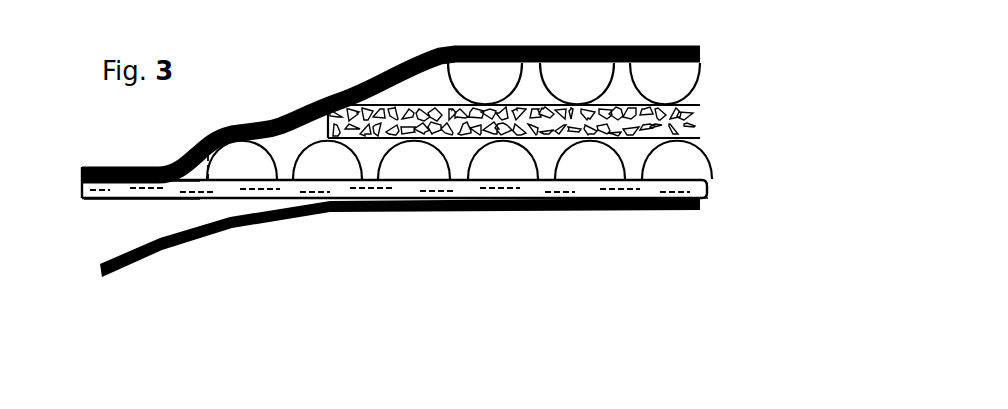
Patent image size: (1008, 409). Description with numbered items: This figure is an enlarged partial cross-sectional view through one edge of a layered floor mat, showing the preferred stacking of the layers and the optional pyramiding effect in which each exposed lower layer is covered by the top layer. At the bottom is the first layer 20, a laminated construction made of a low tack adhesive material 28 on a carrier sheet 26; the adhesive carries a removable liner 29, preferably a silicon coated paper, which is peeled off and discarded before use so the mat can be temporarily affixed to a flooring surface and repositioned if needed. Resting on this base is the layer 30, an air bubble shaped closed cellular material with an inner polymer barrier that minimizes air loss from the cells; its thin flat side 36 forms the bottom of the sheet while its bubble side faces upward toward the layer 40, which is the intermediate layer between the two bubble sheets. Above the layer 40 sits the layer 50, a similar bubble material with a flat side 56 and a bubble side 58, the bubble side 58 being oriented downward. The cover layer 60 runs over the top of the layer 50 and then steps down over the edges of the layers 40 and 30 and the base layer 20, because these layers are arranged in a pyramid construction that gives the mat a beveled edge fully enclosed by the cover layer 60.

The first layer 20 is at (716, 190).
The carrier sheet 26 is at (84, 188).
The low tack adhesive material 28 is at (98, 205).
The removable liner 29 is at (716, 202).
The layer 30 is at (716, 158).
The flat side 36 is at (705, 205).
The layer 40 is at (716, 118).
The layer 50 is at (716, 83).
The flat side 56 is at (705, 56).
The bubble side 58 is at (210, 150).
The cover layer 60 is at (700, 55).